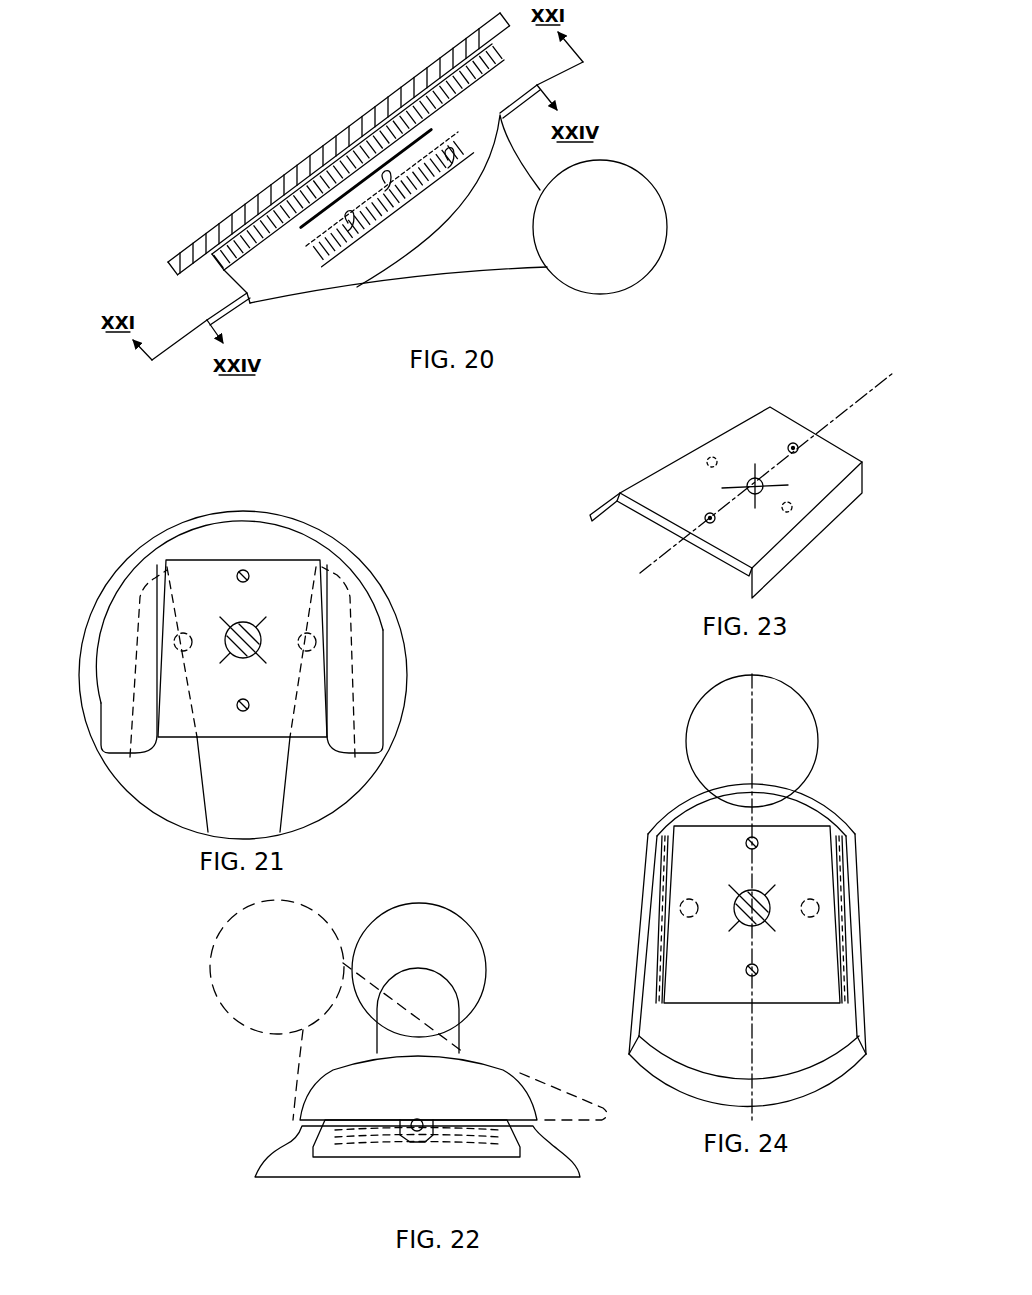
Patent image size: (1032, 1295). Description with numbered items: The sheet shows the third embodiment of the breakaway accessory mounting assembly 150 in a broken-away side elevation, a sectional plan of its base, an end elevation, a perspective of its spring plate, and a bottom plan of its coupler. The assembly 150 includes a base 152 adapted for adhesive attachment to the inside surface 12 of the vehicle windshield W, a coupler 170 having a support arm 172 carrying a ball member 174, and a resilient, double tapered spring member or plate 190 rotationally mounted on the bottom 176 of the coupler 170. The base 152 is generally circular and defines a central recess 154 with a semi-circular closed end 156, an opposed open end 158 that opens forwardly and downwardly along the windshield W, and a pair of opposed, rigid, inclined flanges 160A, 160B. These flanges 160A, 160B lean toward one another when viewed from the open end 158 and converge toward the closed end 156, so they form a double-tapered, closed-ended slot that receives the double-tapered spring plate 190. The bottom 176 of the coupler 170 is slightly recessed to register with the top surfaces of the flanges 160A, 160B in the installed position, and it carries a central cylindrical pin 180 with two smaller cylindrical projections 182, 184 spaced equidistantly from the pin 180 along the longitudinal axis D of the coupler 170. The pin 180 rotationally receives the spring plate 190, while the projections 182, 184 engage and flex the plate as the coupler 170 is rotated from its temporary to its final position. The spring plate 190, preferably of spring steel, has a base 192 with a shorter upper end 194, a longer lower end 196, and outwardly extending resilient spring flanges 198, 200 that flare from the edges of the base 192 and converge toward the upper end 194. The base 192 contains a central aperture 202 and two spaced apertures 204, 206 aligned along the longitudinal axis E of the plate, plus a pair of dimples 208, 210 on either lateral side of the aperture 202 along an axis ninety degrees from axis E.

In FIG. 20, the inside surface 12 is at (483, 55).
In FIG. 20, the windshield W is at (385, 104).
In FIG. 20, the third embodiment of breakaway accessory mounting assembly 150 is at (690, 145).
In FIG. 20, the base 152 is at (275, 200).
In FIG. 21, the base 152 is at (385, 583).
In FIG. 22, the base 152 is at (582, 1171).
In FIG. 21, the central recess 154 is at (293, 553).
In FIG. 22, the central recess 154 is at (380, 1143).
In FIG. 21, the closed end 156 is at (267, 513).
In FIG. 21, the open end 158 is at (167, 755).
In FIG. 21, the inclined flange 160A is at (117, 705).
In FIG. 22, the inclined flange 160A is at (300, 1133).
In FIG. 21, the inclined flange 160B is at (370, 700).
In FIG. 22, the inclined flange 160B is at (535, 1137).
In FIG. 20, the coupler 170 is at (508, 145).
In FIG. 22, the coupler 170 is at (498, 1063).
In FIG. 24, the coupler 170 is at (838, 830).
In FIG. 20, the support arm 172 is at (500, 257).
In FIG. 22, the support arm 172 is at (445, 1025).
In FIG. 20, the ball member 174 is at (584, 236).
In FIG. 22, the ball member 174 is at (458, 932).
In FIG. 24, the ball member 174 is at (767, 758).
In FIG. 24, the bottom 176 is at (685, 810).
In FIG. 20, the central cylindrical projection or pin 180 is at (385, 183).
In FIG. 21, the central cylindrical projection or pin 180 is at (247, 618).
In FIG. 24, the central cylindrical projection or pin 180 is at (733, 915).
In FIG. 20, the cylindrical projection 182 is at (450, 153).
In FIG. 21, the cylindrical projection 182 is at (240, 570).
In FIG. 24, the cylindrical projection 182 is at (760, 846).
In FIG. 20, the cylindrical projection 184 is at (348, 223).
In FIG. 21, the cylindrical projection 184 is at (243, 712).
In FIG. 24, the cylindrical projection 184 is at (760, 973).
In FIG. 20, the resilient spring member or plate 190 is at (360, 207).
In FIG. 21, the resilient spring member or plate 190 is at (320, 745).
In FIG. 22, the resilient spring member or plate 190 is at (450, 1117).
In FIG. 23, the resilient spring member or plate 190 is at (848, 390).
In FIG. 24, the resilient spring member or plate 190 is at (782, 1010).
In FIG. 21, the base of spring plate 192 is at (203, 697).
In FIG. 23, the base of spring plate 192 is at (845, 465).
In FIG. 24, the base of spring plate 192 is at (787, 955).
In FIG. 21, the upper end 194 is at (210, 558).
In FIG. 23, the upper end 194 is at (833, 442).
In FIG. 21, the lower end 196 is at (290, 743).
In FIG. 23, the lower end 196 is at (712, 555).
In FIG. 23, the resilient spring flange 198 is at (607, 510).
In FIG. 23, the resilient spring flange 200 is at (793, 547).
In FIG. 23, the central aperture 202 is at (742, 477).
In FIG. 23, the aperture 204 is at (793, 443).
In FIG. 23, the aperture 206 is at (705, 518).
In FIG. 21, the dimple or depression 208 is at (173, 633).
In FIG. 23, the dimple or depression 208 is at (707, 458).
In FIG. 24, the dimple or depression 208 is at (820, 905).
In FIG. 21, the dimple or depression 210 is at (317, 643).
In FIG. 23, the dimple or depression 210 is at (793, 507).
In FIG. 24, the dimple or depression 210 is at (680, 905).
In FIG. 23, the longitudinal axis of spring plate E is at (893, 373).
In FIG. 24, the longitudinal axis of coupler D is at (748, 682).